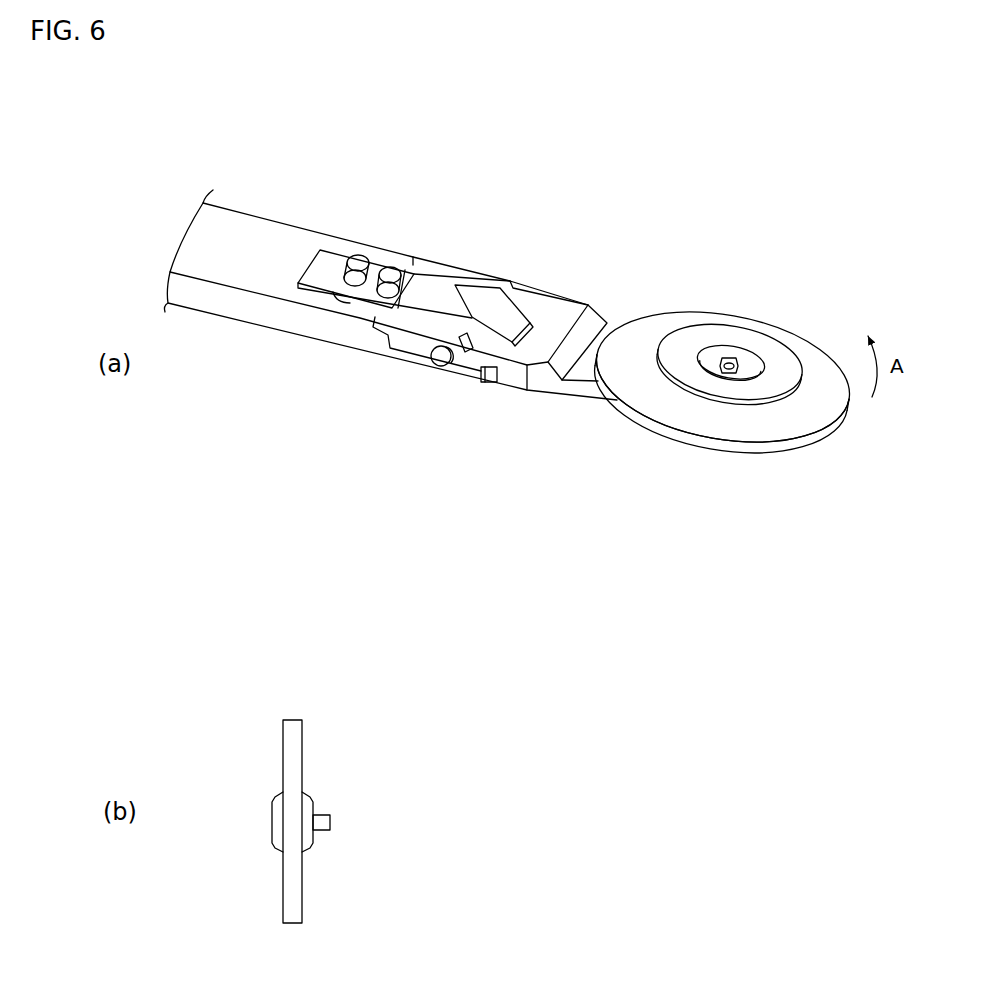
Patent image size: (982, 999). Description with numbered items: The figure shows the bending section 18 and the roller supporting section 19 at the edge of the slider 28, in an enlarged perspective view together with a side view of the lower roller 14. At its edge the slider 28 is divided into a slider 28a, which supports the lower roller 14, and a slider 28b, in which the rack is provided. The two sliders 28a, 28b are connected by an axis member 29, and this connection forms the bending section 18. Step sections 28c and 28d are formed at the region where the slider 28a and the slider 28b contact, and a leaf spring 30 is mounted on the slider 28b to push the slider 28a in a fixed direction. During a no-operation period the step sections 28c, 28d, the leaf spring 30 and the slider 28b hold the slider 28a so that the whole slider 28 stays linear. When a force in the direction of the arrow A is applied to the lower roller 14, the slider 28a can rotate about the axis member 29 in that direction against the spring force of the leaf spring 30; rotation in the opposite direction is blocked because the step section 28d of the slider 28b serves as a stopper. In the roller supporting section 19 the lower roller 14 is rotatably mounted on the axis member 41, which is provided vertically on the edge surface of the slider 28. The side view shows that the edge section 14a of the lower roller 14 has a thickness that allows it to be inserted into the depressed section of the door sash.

The lower roller 14 is at (683, 318).
The edge section of the lower roller 14a is at (302, 722).
The bending section 18 is at (531, 246).
The roller supporting section 19 is at (656, 449).
The slider 28 is at (263, 216).
The slider for supporting the lower roller 28a is at (566, 300).
The slider in which the rack is provided 28b is at (428, 260).
The step section 28c is at (487, 382).
The step section 28d is at (465, 352).
The axis member 29 is at (440, 361).
The leaf spring 30 is at (470, 290).
The axis member 41 is at (738, 350).